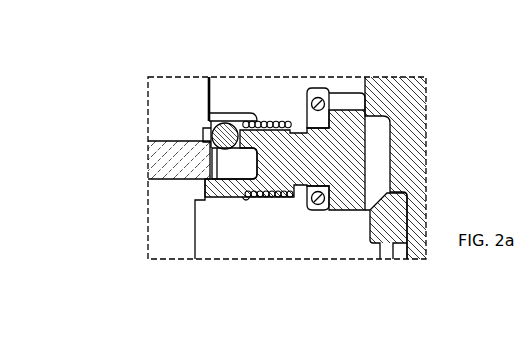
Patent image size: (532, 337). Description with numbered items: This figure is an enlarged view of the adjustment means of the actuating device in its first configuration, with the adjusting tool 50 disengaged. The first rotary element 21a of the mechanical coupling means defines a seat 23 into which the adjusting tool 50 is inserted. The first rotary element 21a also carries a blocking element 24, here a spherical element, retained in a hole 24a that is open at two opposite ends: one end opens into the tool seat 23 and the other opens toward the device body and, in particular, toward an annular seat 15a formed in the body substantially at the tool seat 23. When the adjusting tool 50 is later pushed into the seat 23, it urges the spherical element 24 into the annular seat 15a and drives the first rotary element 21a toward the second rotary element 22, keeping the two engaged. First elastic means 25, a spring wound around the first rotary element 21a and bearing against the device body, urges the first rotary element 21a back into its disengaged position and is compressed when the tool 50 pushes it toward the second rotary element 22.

The adjusting tool 50 is at (178, 150).
The blocking element 24 is at (209, 123).
The hole 24a is at (232, 120).
The first elastic means 25 is at (272, 121).
The first rotary element 21a is at (352, 124).
The seat 23 is at (226, 158).
The annular seat 15a is at (248, 200).
The second rotary element 22 is at (387, 229).